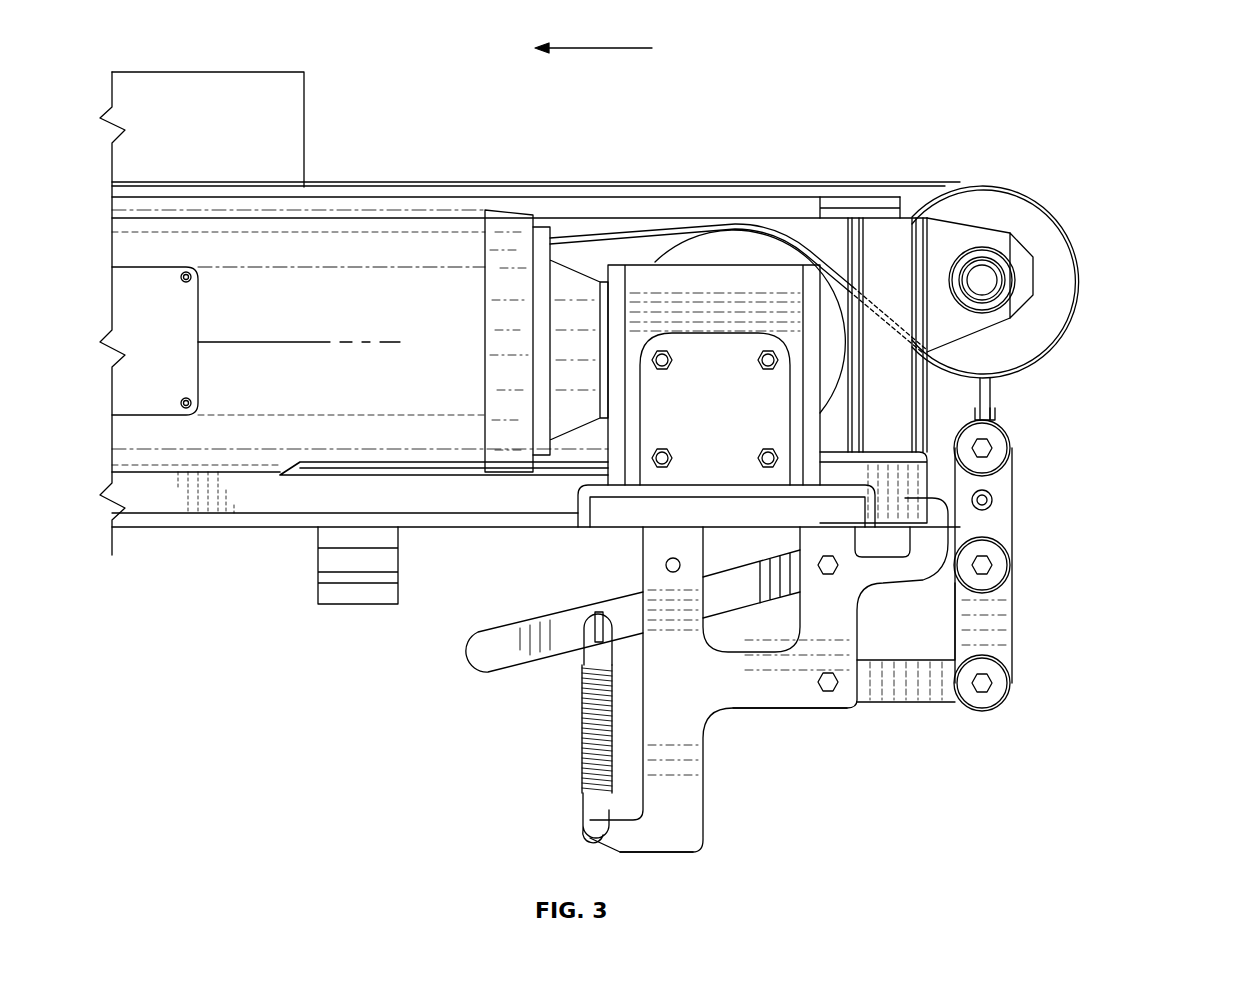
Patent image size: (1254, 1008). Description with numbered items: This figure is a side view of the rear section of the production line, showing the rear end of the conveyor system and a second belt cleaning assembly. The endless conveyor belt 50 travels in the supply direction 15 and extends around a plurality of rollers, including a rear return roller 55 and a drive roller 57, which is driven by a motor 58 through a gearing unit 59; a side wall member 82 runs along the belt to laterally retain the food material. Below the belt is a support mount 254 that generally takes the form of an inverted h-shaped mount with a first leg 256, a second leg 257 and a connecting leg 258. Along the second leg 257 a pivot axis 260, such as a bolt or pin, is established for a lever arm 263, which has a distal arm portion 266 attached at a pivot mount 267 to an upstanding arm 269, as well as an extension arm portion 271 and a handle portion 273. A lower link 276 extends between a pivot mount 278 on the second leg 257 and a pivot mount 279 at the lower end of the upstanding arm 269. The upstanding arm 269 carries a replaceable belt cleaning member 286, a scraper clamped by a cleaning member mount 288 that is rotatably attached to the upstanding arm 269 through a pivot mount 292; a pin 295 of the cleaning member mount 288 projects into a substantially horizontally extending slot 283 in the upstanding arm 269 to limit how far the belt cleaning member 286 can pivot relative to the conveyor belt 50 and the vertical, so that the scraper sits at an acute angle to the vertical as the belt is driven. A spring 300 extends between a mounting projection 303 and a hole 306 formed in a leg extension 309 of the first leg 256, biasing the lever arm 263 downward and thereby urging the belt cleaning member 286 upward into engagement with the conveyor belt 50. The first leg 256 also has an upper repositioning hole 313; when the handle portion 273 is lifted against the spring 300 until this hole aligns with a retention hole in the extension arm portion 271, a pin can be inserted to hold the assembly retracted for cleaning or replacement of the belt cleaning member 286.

The supply direction 15 is at (607, 48).
The side wall member 82 is at (282, 118).
The motor 58 is at (345, 252).
The gearing unit 59 is at (633, 287).
The drive roller 57 is at (735, 250).
The conveyor belt 50 is at (912, 185).
The rear return roller 55 is at (1020, 210).
The belt cleaning member 286 is at (993, 400).
The second leg 257 is at (1062, 412).
The cleaning member mount 288 is at (1000, 418).
The pivot mount 292 is at (992, 450).
The slot 283 is at (993, 500).
The pin 295 is at (985, 508).
The pivot mount 267 is at (992, 567).
The upstanding arm 269 is at (1012, 618).
The pivot mount 279 is at (992, 685).
The lever arm 263 is at (631, 587).
The upper repositioning hole 313 is at (681, 565).
The extension arm portion 271 is at (718, 594).
The pivot axis 260 is at (828, 577).
The distal arm portion 266 is at (947, 560).
The mounting projection 303 is at (590, 624).
The handle portion 273 is at (481, 660).
The first leg 256 is at (560, 743).
The spring 300 is at (580, 775).
The hole 306 is at (590, 838).
The leg extension 309 is at (690, 855).
The support mount 254 is at (741, 712).
The connecting leg 258 is at (783, 700).
The pivot mount 278 is at (833, 693).
The lower link 276 is at (928, 690).